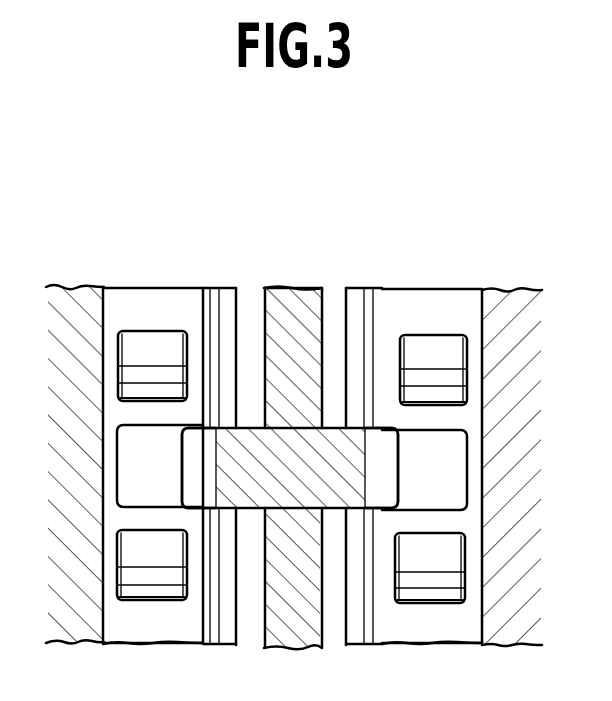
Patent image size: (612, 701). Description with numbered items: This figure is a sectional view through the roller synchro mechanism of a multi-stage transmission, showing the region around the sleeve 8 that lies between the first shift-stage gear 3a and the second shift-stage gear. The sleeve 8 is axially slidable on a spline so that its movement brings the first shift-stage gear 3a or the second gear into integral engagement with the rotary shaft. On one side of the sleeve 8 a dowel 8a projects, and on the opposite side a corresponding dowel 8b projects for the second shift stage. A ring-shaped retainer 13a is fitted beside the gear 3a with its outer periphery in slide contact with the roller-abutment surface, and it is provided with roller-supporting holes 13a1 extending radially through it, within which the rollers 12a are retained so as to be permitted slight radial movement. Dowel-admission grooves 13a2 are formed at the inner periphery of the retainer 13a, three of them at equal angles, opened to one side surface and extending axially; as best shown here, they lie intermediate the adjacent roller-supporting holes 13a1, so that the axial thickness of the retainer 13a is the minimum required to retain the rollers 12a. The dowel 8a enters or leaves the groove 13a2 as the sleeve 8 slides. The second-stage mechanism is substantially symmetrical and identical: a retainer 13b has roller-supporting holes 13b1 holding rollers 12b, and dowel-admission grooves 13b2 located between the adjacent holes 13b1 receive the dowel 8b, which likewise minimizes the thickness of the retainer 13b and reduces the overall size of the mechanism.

The first shift-stage gear 3a is at (78, 290).
The sleeve 8 is at (298, 297).
The dowel 8a is at (183, 485).
The dowel 8b is at (396, 487).
The rollers 12a is at (169, 343).
The rollers 12b is at (437, 343).
The ring-shaped retainer 13a is at (143, 300).
The roller-supporting holes 13a1 is at (157, 598).
The dowel-admission grooves 13a2 is at (167, 427).
The ring-shaped retainer 13b is at (408, 298).
The roller-supporting holes 13b1 is at (432, 588).
The dowel-admission grooves 13b2 is at (448, 433).